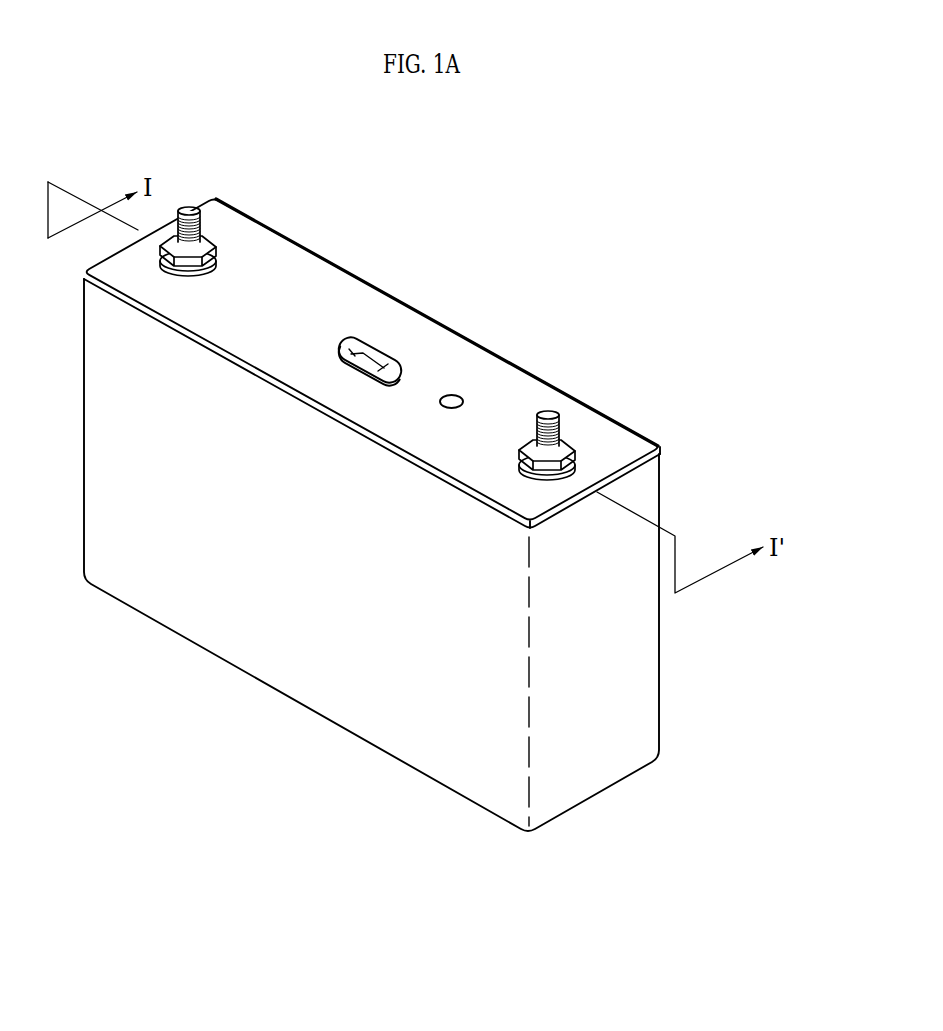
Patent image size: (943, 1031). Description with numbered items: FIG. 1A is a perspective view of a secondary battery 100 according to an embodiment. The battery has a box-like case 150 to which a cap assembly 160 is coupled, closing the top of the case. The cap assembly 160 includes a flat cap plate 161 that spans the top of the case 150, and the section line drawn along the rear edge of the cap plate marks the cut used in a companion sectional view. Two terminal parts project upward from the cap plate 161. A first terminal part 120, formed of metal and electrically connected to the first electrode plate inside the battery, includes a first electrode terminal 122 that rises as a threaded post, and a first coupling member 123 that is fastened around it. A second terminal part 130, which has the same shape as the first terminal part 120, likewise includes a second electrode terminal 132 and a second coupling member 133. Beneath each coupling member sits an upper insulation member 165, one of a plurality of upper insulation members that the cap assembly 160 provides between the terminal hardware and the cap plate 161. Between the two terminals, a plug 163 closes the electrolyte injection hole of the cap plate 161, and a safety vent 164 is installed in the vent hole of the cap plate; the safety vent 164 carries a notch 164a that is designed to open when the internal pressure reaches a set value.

The secondary battery 100 is at (672, 193).
The first terminal part 120 is at (222, 202).
The first electrode terminal 122 is at (206, 226).
The first coupling member 123 is at (214, 246).
The second terminal part 130 is at (583, 394).
The second electrode terminal 132 is at (562, 430).
The second coupling member 133 is at (574, 452).
The case 150 is at (277, 686).
The cap assembly 160 is at (372, 363).
The cap plate 161 is at (338, 289).
The plug 163 is at (463, 398).
The safety vent 164 is at (410, 319).
The notch 164a is at (372, 348).
The upper insulation member 165 is at (214, 265).